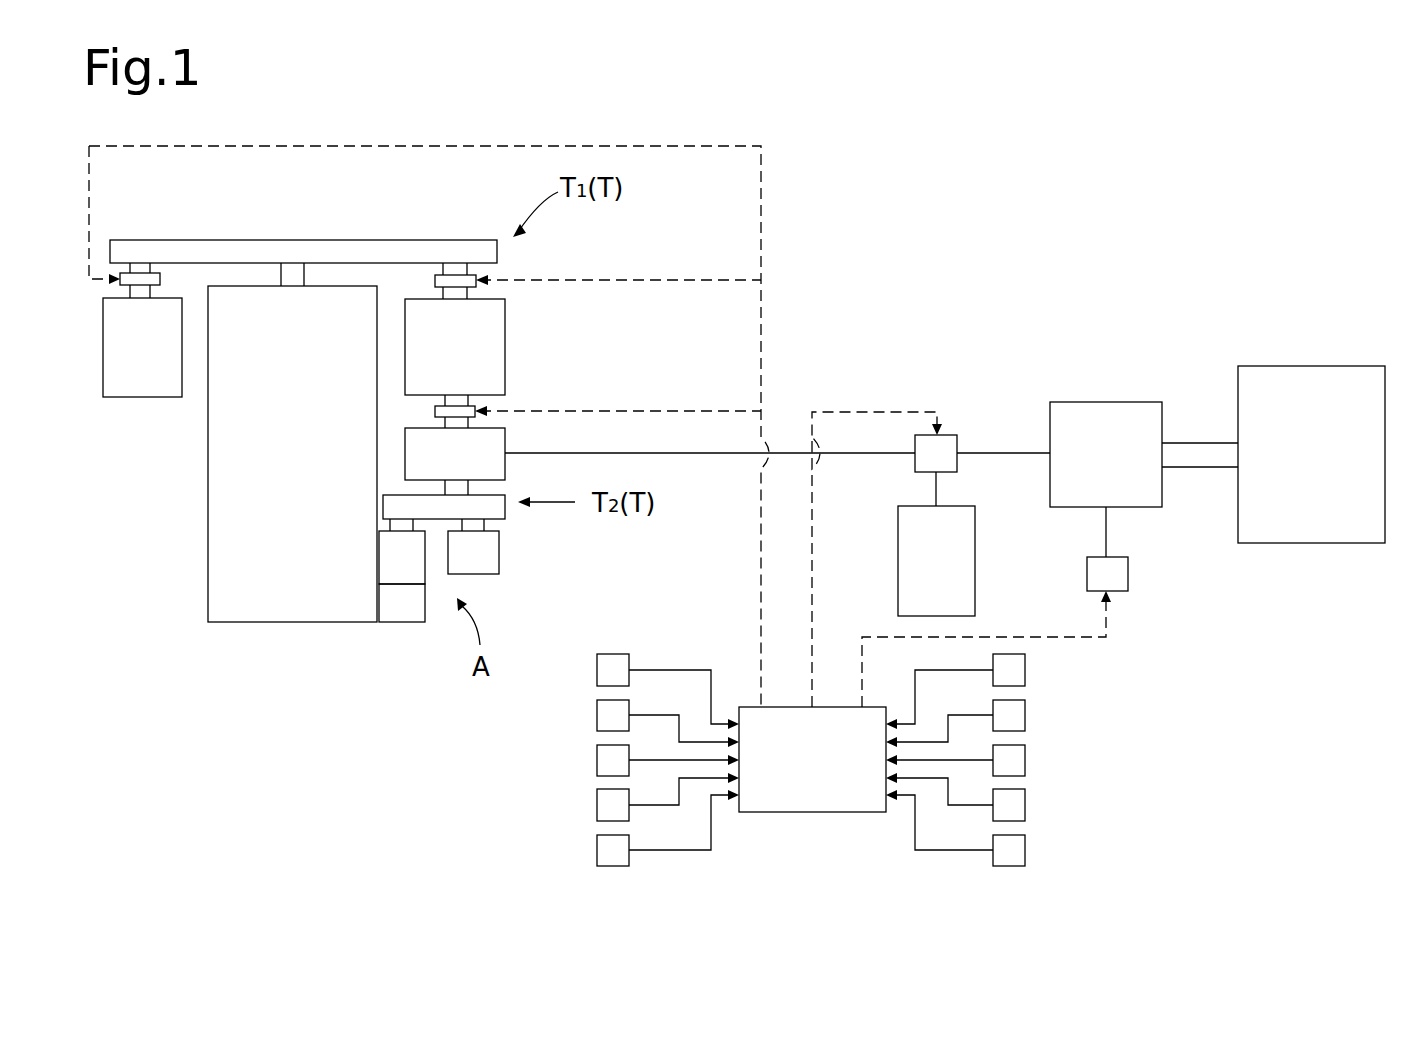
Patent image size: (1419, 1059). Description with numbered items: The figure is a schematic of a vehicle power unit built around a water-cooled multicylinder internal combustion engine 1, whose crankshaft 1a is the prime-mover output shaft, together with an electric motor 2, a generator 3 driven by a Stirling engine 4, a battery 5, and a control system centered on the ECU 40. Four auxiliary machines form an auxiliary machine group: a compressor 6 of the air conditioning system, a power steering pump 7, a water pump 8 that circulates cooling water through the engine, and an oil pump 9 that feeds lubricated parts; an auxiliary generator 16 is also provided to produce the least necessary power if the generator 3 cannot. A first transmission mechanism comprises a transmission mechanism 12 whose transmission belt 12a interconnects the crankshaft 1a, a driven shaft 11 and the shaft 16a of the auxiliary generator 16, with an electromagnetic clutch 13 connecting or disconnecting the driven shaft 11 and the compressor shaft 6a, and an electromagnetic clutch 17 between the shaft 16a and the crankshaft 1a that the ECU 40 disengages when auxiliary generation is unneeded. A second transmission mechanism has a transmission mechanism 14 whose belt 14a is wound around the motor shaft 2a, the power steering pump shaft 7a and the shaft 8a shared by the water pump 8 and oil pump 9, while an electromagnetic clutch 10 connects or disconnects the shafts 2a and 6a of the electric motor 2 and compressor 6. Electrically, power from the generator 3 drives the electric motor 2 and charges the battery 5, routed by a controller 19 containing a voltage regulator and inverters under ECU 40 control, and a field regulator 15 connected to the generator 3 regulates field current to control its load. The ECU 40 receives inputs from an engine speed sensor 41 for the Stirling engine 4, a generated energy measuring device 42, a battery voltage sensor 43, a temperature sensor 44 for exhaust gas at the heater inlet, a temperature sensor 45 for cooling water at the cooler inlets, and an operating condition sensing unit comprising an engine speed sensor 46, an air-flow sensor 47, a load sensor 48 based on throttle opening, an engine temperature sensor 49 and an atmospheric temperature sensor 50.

The internal combustion engine 1 is at (279, 608).
The crankshaft 1a is at (297, 275).
The electric motor 2 is at (480, 450).
The shaft of the electric motor 2a is at (442, 423).
The generator 3 is at (1102, 417).
The Stirling engine 4 is at (1317, 380).
The battery 5 is at (957, 572).
The compressor 6 is at (487, 342).
The shaft of the compressor 6a is at (462, 292).
The power steering pump 7 is at (483, 560).
The shaft of the power steering pump 7a is at (485, 528).
The water pump 8 is at (393, 563).
The shaft of the water pump 8a is at (390, 527).
The oil pump 9 is at (390, 612).
The clutch 10 is at (472, 408).
The driven shaft 11 is at (470, 268).
The transmission mechanism 12 is at (338, 230).
The transmission belt 12a is at (410, 250).
The clutch 13 is at (435, 283).
The transmission mechanism 14 is at (398, 478).
The transmission belt 14a is at (400, 503).
The field regulator 15 is at (1115, 577).
The auxiliary generator 16 is at (162, 385).
The shaft of the auxiliary generator 16a is at (142, 270).
The electromagnetic clutch 17 is at (128, 272).
The controller 19 is at (948, 448).
The control unit (ECU) 40 is at (800, 800).
The engine speed sensor 41 is at (1013, 670).
The generated energy measuring device 42 is at (1013, 715).
The voltage sensor 43 is at (1013, 760).
The temperature sensor 44 is at (1013, 805).
The temperature sensor 45 is at (1013, 850).
The engine speed sensor 46 is at (609, 670).
The air-flow sensor 47 is at (609, 715).
The load sensor 48 is at (609, 760).
The engine temperature sensor 49 is at (609, 805).
The atmospheric temperature sensor 50 is at (609, 850).